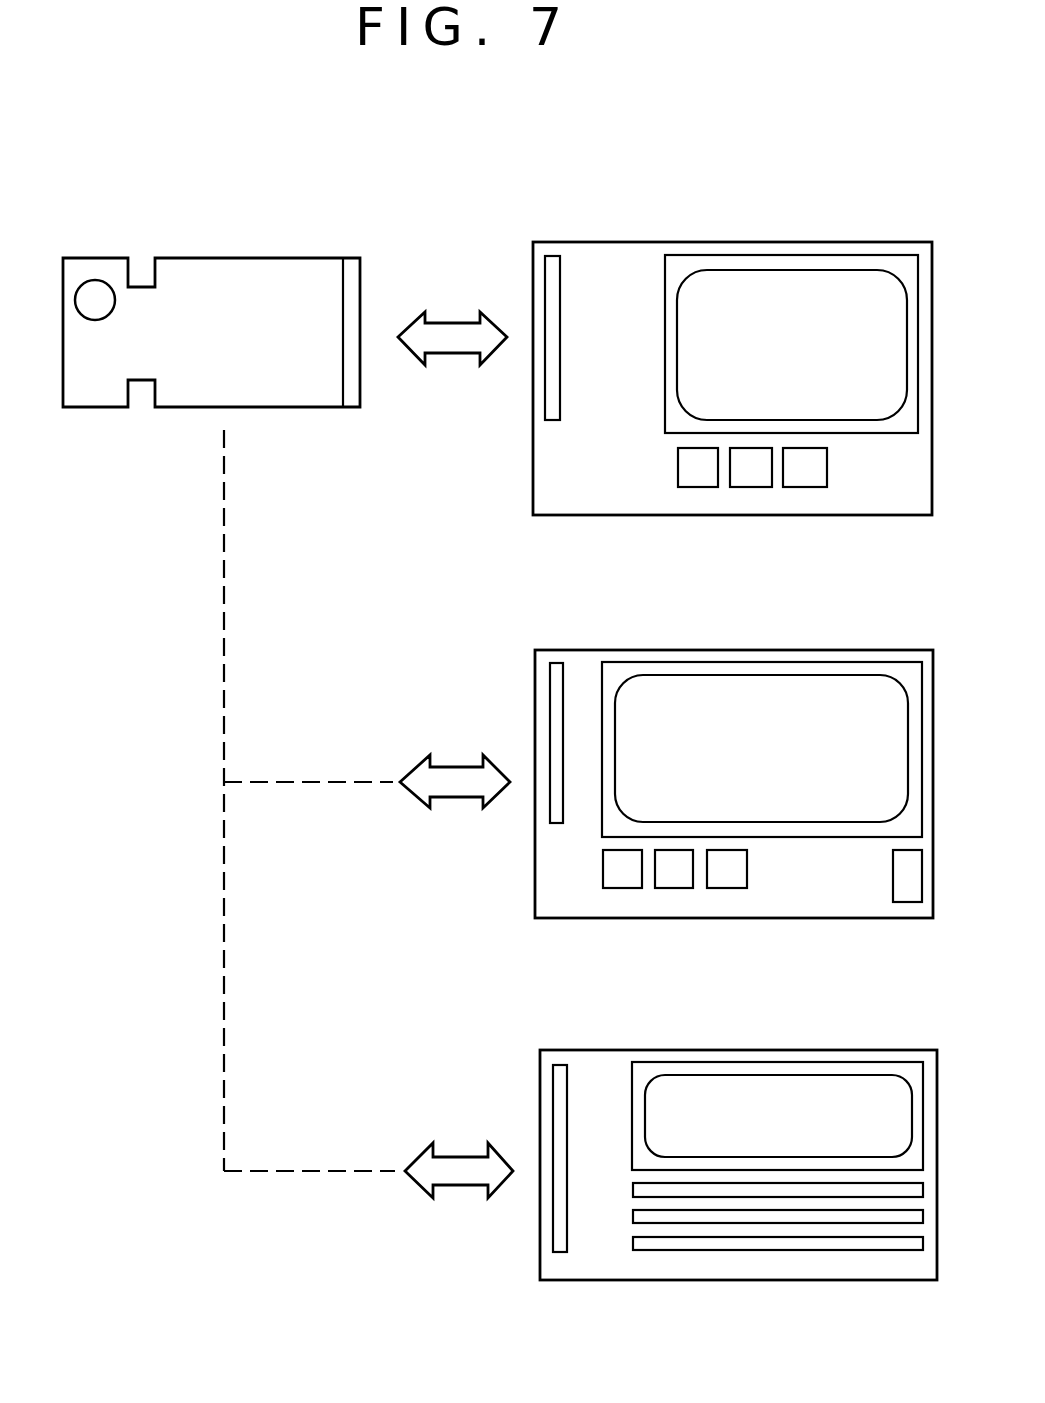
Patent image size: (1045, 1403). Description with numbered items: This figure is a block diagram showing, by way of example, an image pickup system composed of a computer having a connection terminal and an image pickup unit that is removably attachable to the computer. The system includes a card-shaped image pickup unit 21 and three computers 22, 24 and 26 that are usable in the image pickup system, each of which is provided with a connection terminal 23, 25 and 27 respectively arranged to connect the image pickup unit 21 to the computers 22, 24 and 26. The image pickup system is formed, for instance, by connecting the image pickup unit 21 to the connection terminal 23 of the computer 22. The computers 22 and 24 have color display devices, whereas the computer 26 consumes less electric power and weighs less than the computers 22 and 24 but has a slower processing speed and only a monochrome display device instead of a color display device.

The image pickup unit 21 is at (335, 218).
The computer 22 is at (732, 382).
The connection terminal 23 is at (560, 283).
The computer 24 is at (734, 782).
The connection terminal 25 is at (563, 688).
The computer 26 is at (738, 1166).
The connection terminal 27 is at (568, 1087).